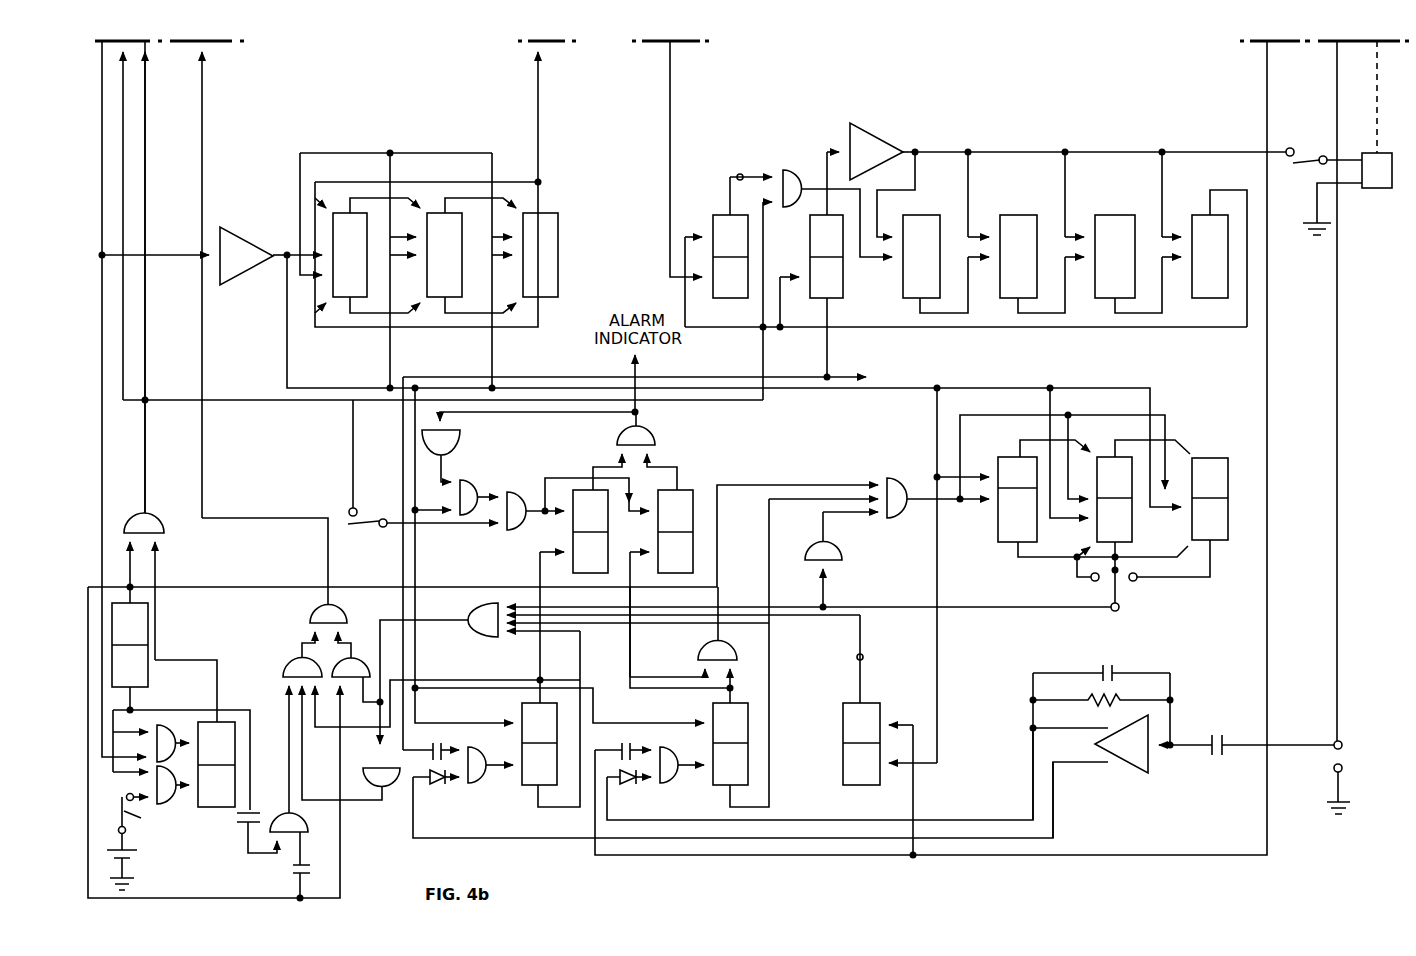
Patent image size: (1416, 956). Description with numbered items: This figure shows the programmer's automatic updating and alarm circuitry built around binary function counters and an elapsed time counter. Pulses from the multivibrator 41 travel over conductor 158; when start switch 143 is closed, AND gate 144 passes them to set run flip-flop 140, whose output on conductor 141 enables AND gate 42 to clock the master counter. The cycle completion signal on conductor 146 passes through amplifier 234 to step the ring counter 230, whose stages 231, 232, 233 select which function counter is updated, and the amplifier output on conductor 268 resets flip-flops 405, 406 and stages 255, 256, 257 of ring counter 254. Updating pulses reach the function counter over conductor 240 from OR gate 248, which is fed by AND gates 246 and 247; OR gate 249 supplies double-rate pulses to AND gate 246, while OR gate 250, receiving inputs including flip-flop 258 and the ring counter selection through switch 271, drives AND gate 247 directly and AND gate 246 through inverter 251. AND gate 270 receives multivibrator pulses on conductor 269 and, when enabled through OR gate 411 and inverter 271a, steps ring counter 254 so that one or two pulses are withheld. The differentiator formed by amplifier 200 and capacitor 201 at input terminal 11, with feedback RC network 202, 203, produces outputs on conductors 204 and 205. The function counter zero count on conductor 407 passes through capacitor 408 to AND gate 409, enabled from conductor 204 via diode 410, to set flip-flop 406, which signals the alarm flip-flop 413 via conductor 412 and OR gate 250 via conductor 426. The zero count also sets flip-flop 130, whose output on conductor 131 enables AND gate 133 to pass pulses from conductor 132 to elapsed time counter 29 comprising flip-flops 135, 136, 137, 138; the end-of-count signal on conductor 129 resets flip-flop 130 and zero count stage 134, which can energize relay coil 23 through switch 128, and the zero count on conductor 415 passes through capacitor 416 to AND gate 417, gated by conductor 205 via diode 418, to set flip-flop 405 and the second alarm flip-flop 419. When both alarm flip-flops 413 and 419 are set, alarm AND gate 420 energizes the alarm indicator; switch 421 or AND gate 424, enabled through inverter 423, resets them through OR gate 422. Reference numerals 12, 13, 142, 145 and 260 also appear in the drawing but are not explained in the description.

The input terminal 11 is at (1342, 742).
The ground terminal 12 is at (1342, 770).
The power supply line 13 is at (1337, 324).
The relay coil 23 is at (1382, 190).
The elapsed time counter 29 is at (984, 253).
The multivibrator 41 is at (148, 680).
The AND gate 42 is at (154, 512).
The switch 128 is at (1307, 166).
The conductor 129 is at (738, 330).
The START flip-flop 130 is at (730, 303).
The conductor 131 is at (736, 175).
The conductor 132 is at (766, 358).
The AND gate 133 is at (805, 168).
The zero count stage 134 is at (855, 298).
The flip-flop 135 is at (903, 283).
The flip-flop 136 is at (1004, 298).
The flip-flop 137 is at (1097, 298).
The flip-flop 138 is at (1192, 298).
The run flip-flop 140 is at (212, 808).
The conductor 141 is at (217, 660).
The battery 142 is at (138, 858).
The start switch 143 is at (143, 818).
The AND gate 144 is at (178, 800).
The AND gate 145 is at (172, 722).
The conductor 146 is at (102, 498).
The conductor 158 is at (160, 900).
The amplifier 200 is at (1128, 772).
The capacitor 201 is at (1216, 758).
The RC network capacitor 202 is at (1110, 666).
The RC network resistor 203 is at (1096, 705).
The output conductor 204 is at (1033, 780).
The output conductor 205 is at (1053, 814).
The ring counter 230 is at (454, 252).
The stage 231 is at (368, 298).
The stage 232 is at (464, 298).
The stage 233 is at (558, 290).
The amplifier 234 is at (253, 230).
The conductor 240 is at (202, 462).
The AND gate 246 is at (295, 660).
The AND gate 247 is at (362, 657).
The OR gate 248 is at (312, 612).
The OR gate 249 is at (286, 812).
The OR gate 250 is at (468, 626).
The inverter 251 is at (392, 796).
The ring counter 254 is at (1098, 561).
The stage 255 is at (998, 540).
The stage 256 is at (1132, 532).
The stage 257 is at (1228, 532).
The flip-flop 258 is at (843, 718).
The connection 260 is at (864, 658).
The conductor 268 is at (290, 352).
The conductor 269 is at (250, 590).
The AND gate 270 is at (905, 478).
The switch 271 is at (1121, 596).
The inverter 271a is at (844, 555).
The flip-flop 405 is at (490, 790).
The flip-flop 406 is at (748, 760).
The conductor 407 is at (1267, 372).
The capacitor 408 is at (627, 742).
The AND gate 409 is at (678, 782).
The diode 410 is at (625, 786).
The OR gate 411 is at (700, 648).
The conductor 412 is at (630, 646).
The alarm flip-flop 413 is at (693, 542).
The conductor 415 is at (555, 377).
The capacitor 416 is at (437, 742).
The AND gate 417 is at (486, 782).
The diode 418 is at (432, 786).
The alarm flip-flop 419 is at (608, 556).
The alarm AND gate 420 is at (658, 434).
The switch 421 is at (357, 527).
The OR gate 422 is at (518, 532).
The inverter 423 is at (458, 446).
The AND gate 424 is at (480, 486).
The conductor 426 is at (765, 672).